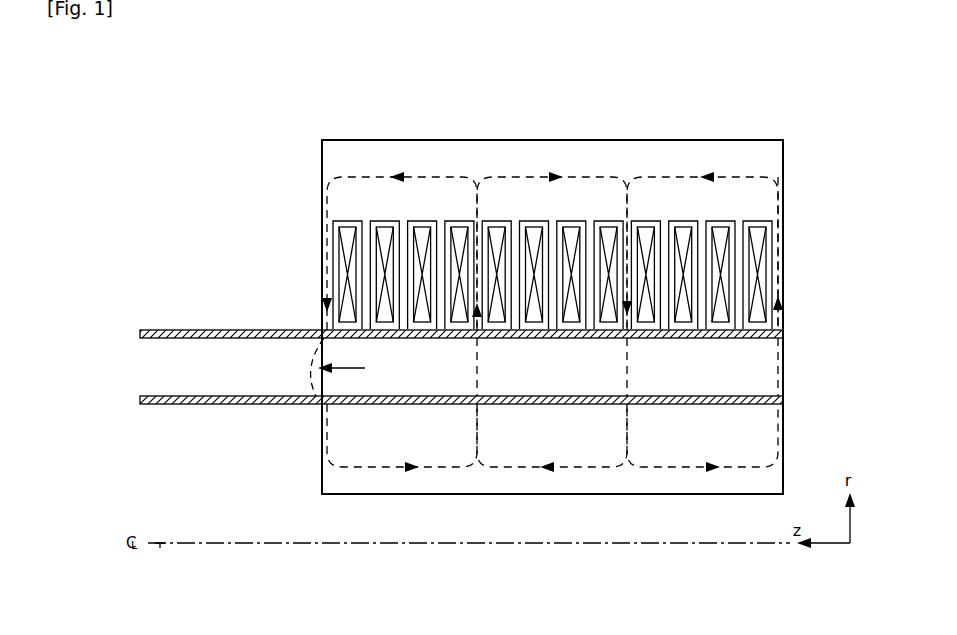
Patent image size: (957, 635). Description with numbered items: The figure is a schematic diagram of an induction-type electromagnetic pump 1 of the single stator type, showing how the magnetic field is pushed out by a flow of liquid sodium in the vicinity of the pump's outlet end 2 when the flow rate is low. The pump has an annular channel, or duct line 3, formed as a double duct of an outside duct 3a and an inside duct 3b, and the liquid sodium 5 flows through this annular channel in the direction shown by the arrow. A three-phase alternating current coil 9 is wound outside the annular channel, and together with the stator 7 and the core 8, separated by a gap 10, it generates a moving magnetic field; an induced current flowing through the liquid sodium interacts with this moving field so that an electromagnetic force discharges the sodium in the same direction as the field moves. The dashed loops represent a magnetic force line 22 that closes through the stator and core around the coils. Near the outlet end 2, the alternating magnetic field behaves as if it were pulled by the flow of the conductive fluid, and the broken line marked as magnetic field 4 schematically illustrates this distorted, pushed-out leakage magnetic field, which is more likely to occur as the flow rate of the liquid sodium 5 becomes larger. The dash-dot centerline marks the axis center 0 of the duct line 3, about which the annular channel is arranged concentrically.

The electromagnetic pump 1 is at (675, 131).
The outlet end 2 is at (318, 329).
The annular channel (duct line) 3 is at (431, 327).
The outside duct 3a is at (157, 333).
The inside duct 3b is at (141, 400).
The magnetic field (leakage magnetic field) 4 is at (310, 365).
The liquid sodium (conductive fluid) 5 is at (210, 355).
The stator 7 is at (447, 156).
The core 8 is at (775, 468).
The coil 9 is at (762, 278).
The gap 10 is at (778, 330).
The magnetic force line 22 is at (522, 156).
The axis center 0 is at (160, 548).